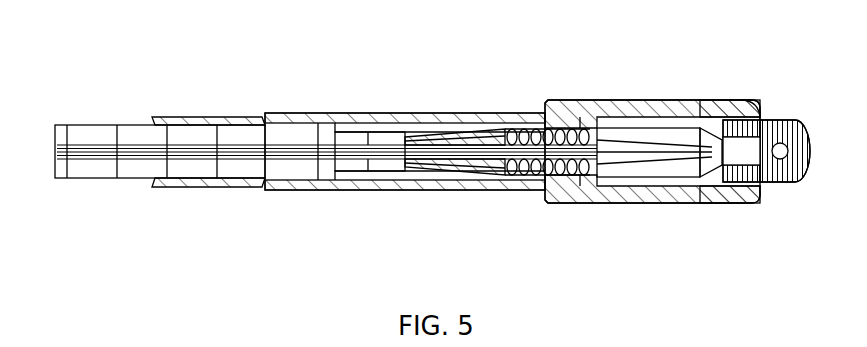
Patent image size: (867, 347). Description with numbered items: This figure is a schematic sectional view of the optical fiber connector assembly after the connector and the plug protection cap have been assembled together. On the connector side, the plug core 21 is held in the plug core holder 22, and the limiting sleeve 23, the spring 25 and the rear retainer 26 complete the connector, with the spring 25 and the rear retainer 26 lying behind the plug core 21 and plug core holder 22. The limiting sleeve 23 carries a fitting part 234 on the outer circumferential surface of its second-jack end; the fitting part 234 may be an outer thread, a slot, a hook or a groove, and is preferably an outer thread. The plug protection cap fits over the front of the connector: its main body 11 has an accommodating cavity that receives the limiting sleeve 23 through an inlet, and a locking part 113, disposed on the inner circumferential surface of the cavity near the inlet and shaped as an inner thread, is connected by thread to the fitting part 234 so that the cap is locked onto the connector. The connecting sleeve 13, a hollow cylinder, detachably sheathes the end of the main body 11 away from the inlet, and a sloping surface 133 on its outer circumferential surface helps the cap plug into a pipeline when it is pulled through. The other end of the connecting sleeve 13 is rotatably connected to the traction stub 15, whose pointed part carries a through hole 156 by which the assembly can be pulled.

The main body 11 is at (615, 118).
The locking part 113 is at (582, 118).
The connecting sleeve 13 is at (703, 103).
The sloping surface 133 is at (760, 103).
The traction stub 15 is at (797, 122).
The through hole 156 is at (789, 183).
The plug core 21 is at (395, 112).
The plug core holder 22 is at (333, 112).
The limiting sleeve 23 is at (508, 112).
The fitting part 234 is at (545, 118).
The spring 25 is at (515, 185).
The rear retainer 26 is at (583, 182).